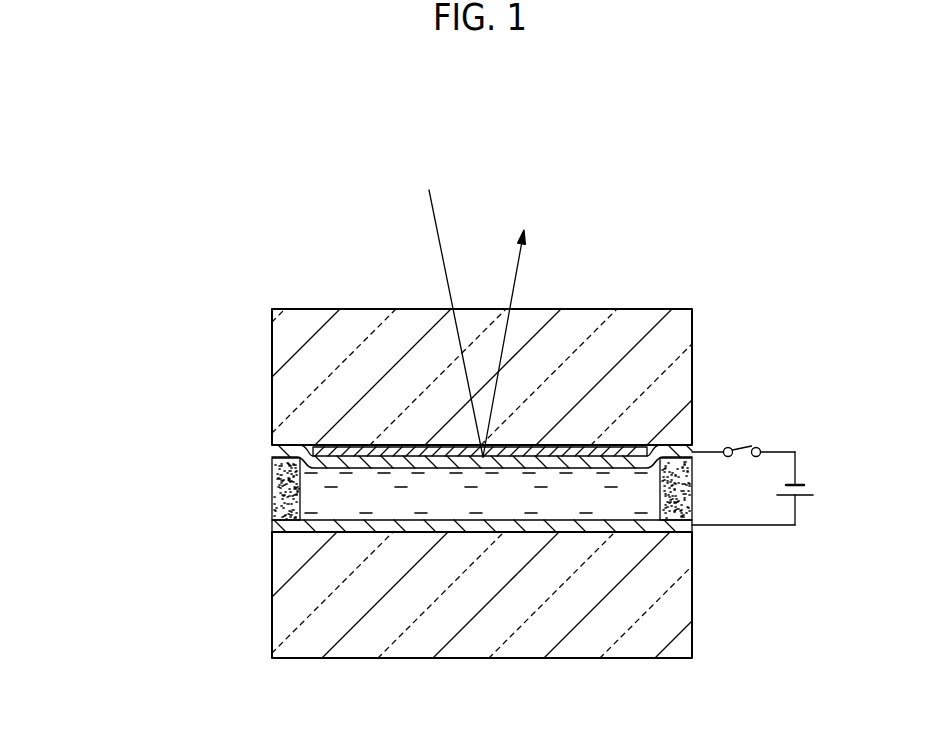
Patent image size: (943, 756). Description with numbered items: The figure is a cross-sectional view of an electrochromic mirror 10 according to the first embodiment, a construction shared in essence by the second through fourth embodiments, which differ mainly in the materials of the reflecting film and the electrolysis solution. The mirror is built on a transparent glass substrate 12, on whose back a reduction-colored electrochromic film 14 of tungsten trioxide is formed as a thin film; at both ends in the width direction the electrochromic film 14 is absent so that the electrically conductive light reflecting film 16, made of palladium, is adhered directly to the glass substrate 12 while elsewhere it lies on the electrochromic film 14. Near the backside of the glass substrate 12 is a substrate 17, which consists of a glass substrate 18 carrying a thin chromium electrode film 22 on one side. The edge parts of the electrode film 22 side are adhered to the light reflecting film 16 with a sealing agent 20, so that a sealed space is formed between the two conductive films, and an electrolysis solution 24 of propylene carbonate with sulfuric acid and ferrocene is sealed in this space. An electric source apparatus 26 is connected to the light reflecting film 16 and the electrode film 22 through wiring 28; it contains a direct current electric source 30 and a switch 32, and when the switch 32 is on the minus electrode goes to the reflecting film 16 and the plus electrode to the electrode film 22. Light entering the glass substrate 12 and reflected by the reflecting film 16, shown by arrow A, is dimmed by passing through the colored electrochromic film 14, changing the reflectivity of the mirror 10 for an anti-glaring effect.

The electrochromic mirror 10 is at (612, 214).
The glass substrate 12 is at (272, 327).
The electrochromic film 14 is at (362, 449).
The electrically conductive light reflecting film 16 is at (272, 445).
The substrate 17 is at (181, 528).
The glass substrate 18 is at (278, 592).
The sealing agent 20 is at (285, 472).
The electrode film 22 is at (280, 527).
The electrolysis solution 24 is at (318, 500).
The electric source apparatus 26 is at (801, 441).
The wiring 28 is at (714, 450).
The direct current electric source 30 is at (800, 480).
The switch 32 is at (750, 446).
The arrow A is at (440, 250).